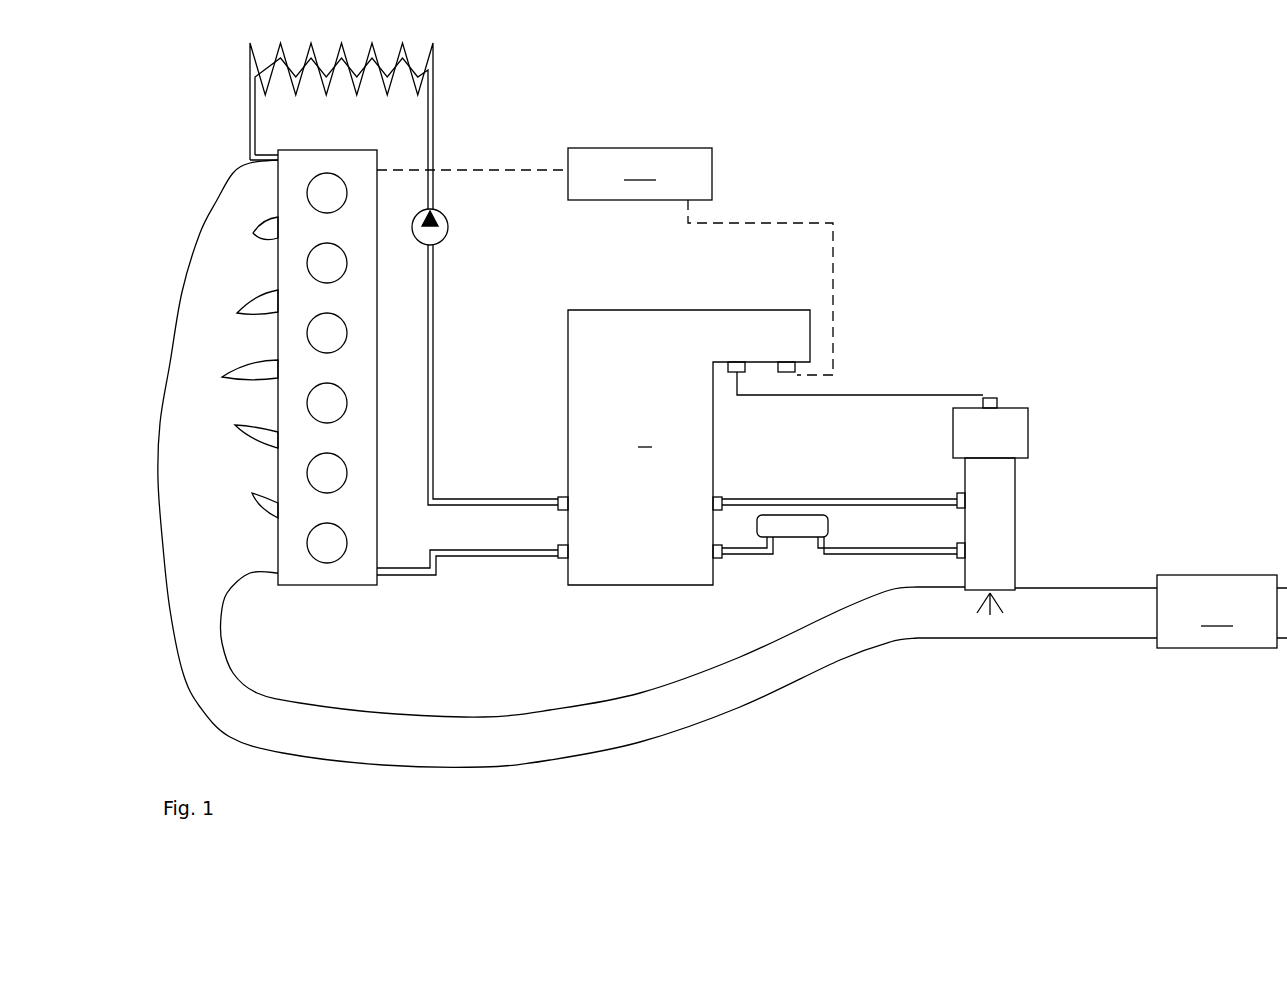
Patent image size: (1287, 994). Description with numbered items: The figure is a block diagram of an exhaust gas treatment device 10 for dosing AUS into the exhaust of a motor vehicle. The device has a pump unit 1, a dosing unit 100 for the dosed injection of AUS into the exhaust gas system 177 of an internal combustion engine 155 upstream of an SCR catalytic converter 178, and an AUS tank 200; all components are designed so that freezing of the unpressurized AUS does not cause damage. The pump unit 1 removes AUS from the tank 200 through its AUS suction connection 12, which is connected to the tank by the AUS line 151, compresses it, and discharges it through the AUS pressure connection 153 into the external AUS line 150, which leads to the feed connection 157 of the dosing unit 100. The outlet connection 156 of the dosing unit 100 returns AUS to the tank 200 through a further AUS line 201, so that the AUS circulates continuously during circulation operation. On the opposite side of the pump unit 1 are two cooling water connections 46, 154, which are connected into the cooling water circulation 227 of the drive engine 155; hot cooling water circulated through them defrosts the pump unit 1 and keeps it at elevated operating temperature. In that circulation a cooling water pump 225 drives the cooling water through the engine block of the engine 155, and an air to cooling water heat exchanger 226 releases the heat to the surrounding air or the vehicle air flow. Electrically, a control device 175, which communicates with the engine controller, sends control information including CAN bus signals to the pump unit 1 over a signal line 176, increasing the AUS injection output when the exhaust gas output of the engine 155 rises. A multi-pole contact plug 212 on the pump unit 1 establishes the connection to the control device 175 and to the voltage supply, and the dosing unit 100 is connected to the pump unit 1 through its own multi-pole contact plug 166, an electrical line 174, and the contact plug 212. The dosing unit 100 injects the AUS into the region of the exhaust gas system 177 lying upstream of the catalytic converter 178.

The exhaust gas treatment device 10 is at (960, 173).
The pump unit 1 is at (689, 447).
The AUS suction connection 12 is at (722, 552).
The cooling water connection 46 is at (560, 556).
The dosing unit 100 is at (1034, 509).
The external AUS line 150 is at (815, 499).
The AUS line 151 is at (752, 563).
The AUS pressure connection 153 is at (722, 500).
The cooling water connection 154 is at (560, 499).
The internal combustion engine 155 is at (321, 578).
The outlet connection 156 is at (957, 558).
The feed connection 157 is at (957, 498).
The multi-pole contact plug 166 is at (1000, 403).
The electrical line 174 is at (889, 395).
The control device 175 is at (544, 174).
The signal line 176 is at (786, 223).
The exhaust gas system 177 is at (913, 618).
The SCR catalytic converter 178 is at (1217, 611).
The AUS tank 200 is at (795, 540).
The further AUS line 201 is at (876, 548).
The multi-pole contact plug 212 is at (735, 362).
The cooling water pump 225 is at (448, 229).
The air to cooling water heat exchanger 226 is at (434, 50).
The cooling water circulation 227 is at (434, 342).